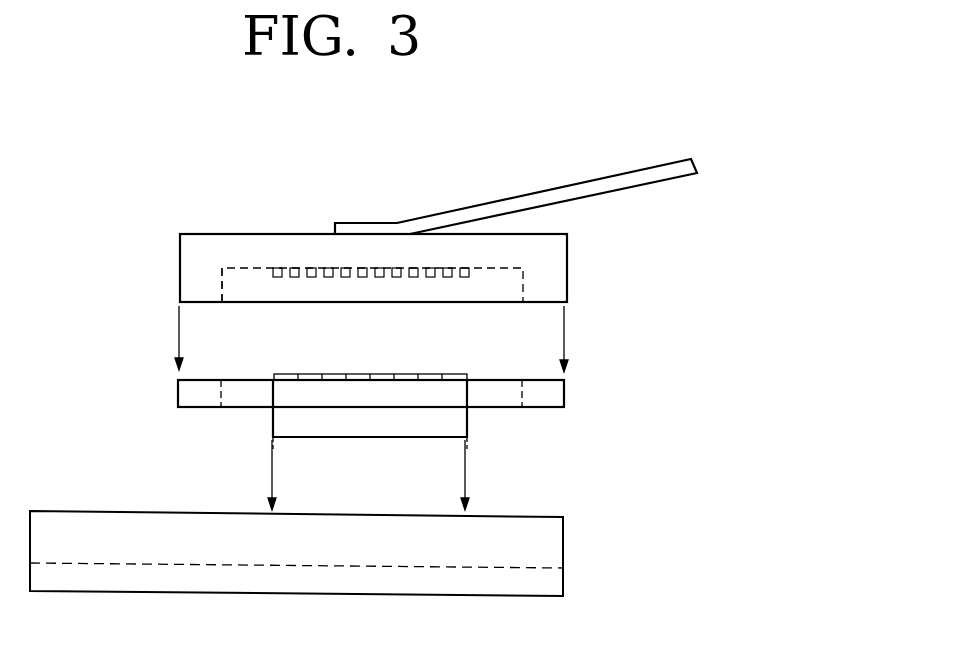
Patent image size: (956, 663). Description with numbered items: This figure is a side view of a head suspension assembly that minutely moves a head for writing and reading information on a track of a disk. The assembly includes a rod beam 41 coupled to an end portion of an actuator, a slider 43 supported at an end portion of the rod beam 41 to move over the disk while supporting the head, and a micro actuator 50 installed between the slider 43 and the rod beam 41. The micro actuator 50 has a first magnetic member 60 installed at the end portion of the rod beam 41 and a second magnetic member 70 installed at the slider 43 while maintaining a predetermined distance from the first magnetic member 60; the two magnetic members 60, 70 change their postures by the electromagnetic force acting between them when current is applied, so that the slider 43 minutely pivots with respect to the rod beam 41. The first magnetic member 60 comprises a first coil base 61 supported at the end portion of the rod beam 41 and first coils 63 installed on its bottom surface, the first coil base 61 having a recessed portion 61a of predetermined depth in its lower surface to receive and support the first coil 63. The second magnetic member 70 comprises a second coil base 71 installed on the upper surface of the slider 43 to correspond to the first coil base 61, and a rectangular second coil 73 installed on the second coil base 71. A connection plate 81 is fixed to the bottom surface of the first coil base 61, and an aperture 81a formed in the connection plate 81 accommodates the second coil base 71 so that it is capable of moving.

The rod beam 41 is at (560, 192).
The slider 43 is at (563, 548).
The micro actuator 50 is at (420, 311).
The first magnetic member 60 is at (404, 251).
The first coil base 61 is at (180, 262).
The recessed portion 61a is at (222, 302).
The first coil 63 is at (345, 272).
The second magnetic member 70 is at (387, 391).
The second coil base 71 is at (273, 424).
The second coil 73 is at (287, 374).
The connection plate 81 is at (168, 387).
The aperture 81a is at (520, 402).